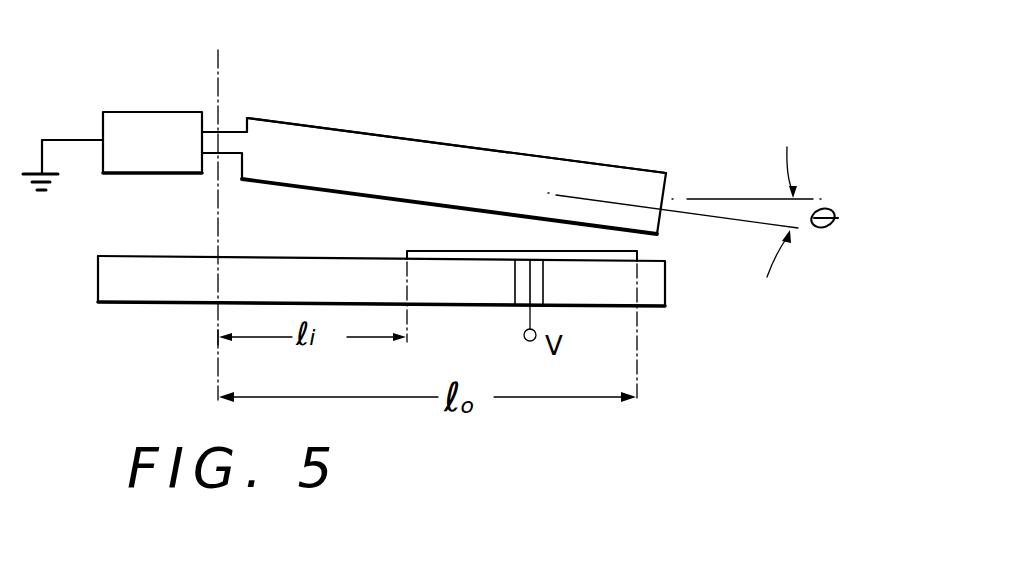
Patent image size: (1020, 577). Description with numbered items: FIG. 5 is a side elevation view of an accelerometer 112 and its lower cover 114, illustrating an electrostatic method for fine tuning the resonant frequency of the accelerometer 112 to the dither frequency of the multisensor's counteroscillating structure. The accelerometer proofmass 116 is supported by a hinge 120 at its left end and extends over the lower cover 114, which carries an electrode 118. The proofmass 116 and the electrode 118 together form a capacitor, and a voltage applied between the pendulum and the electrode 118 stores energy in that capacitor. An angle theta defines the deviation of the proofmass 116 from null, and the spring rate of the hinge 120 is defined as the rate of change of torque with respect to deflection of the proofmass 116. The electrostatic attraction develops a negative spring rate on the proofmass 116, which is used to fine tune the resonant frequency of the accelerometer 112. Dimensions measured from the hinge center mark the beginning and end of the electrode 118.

The accelerometer 112 is at (324, 117).
The lower cover 114 is at (426, 292).
The accelerometer proofmass 116 is at (420, 152).
The electrode 118 is at (428, 250).
The hinge 120 is at (226, 131).